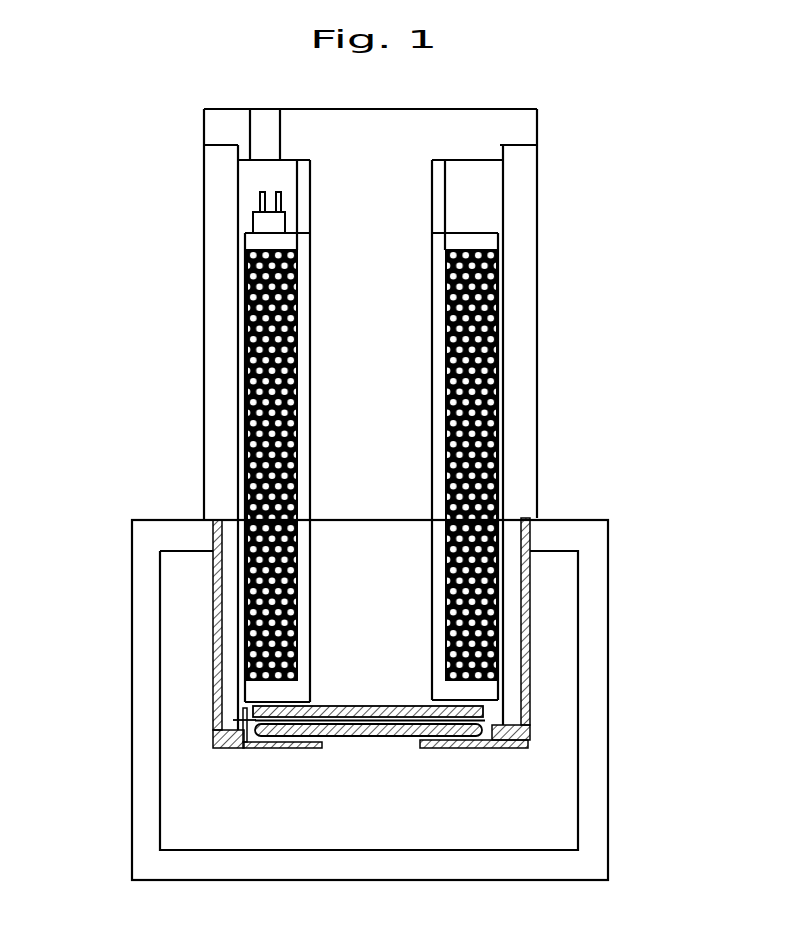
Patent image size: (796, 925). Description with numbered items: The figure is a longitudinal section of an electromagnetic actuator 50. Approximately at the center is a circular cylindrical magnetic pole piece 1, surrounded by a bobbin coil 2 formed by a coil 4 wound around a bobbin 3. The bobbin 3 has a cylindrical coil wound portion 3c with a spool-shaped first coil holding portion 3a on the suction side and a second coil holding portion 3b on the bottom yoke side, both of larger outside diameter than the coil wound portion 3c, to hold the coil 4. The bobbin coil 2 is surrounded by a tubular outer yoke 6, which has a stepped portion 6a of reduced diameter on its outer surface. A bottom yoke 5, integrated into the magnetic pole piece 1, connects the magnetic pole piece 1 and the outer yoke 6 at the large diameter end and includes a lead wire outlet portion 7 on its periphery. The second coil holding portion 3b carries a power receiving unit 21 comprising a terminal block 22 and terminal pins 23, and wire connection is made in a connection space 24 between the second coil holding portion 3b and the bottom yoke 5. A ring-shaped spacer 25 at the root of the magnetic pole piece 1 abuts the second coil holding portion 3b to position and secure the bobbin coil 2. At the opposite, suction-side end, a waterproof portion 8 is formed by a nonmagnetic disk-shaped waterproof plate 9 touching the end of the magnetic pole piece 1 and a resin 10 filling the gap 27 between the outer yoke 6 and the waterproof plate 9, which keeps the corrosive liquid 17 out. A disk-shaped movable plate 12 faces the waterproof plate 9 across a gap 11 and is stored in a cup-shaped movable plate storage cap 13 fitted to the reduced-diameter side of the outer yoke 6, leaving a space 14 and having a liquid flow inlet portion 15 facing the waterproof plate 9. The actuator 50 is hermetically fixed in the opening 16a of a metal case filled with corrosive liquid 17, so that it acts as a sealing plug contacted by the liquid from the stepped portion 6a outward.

The magnetic pole piece 1 is at (373, 337).
The bobbin coil 2 is at (452, 465).
The bobbin 3 is at (437, 332).
The first coil holding portion 3a is at (490, 685).
The second coil holding portion 3b is at (500, 232).
The coil wound portion 3c is at (437, 452).
The coil 4 is at (495, 352).
The bottom yoke 5 is at (497, 117).
The outer yoke 6 is at (213, 168).
The stepped portion 6a is at (528, 518).
The lead wire outlet portion 7 is at (270, 110).
The waterproof portion 8 is at (486, 749).
The waterproof plate 9 is at (527, 737).
The resin 10 is at (493, 705).
The gap 11 is at (335, 737).
The movable plate 12 is at (397, 737).
The movable plate storage cap 13 is at (220, 750).
The space 14 is at (250, 745).
The liquid flow inlet portion 15 is at (360, 745).
The opening 16a is at (222, 530).
The corrosive liquid 17 is at (486, 819).
The power receiving unit 21 is at (159, 243).
The terminal block 22 is at (255, 222).
The terminal pins 23 is at (262, 204).
The connection space 24 is at (280, 168).
The spacer 25 is at (438, 205).
The gap 27 is at (245, 742).
The electromagnetic actuator 50 is at (653, 130).